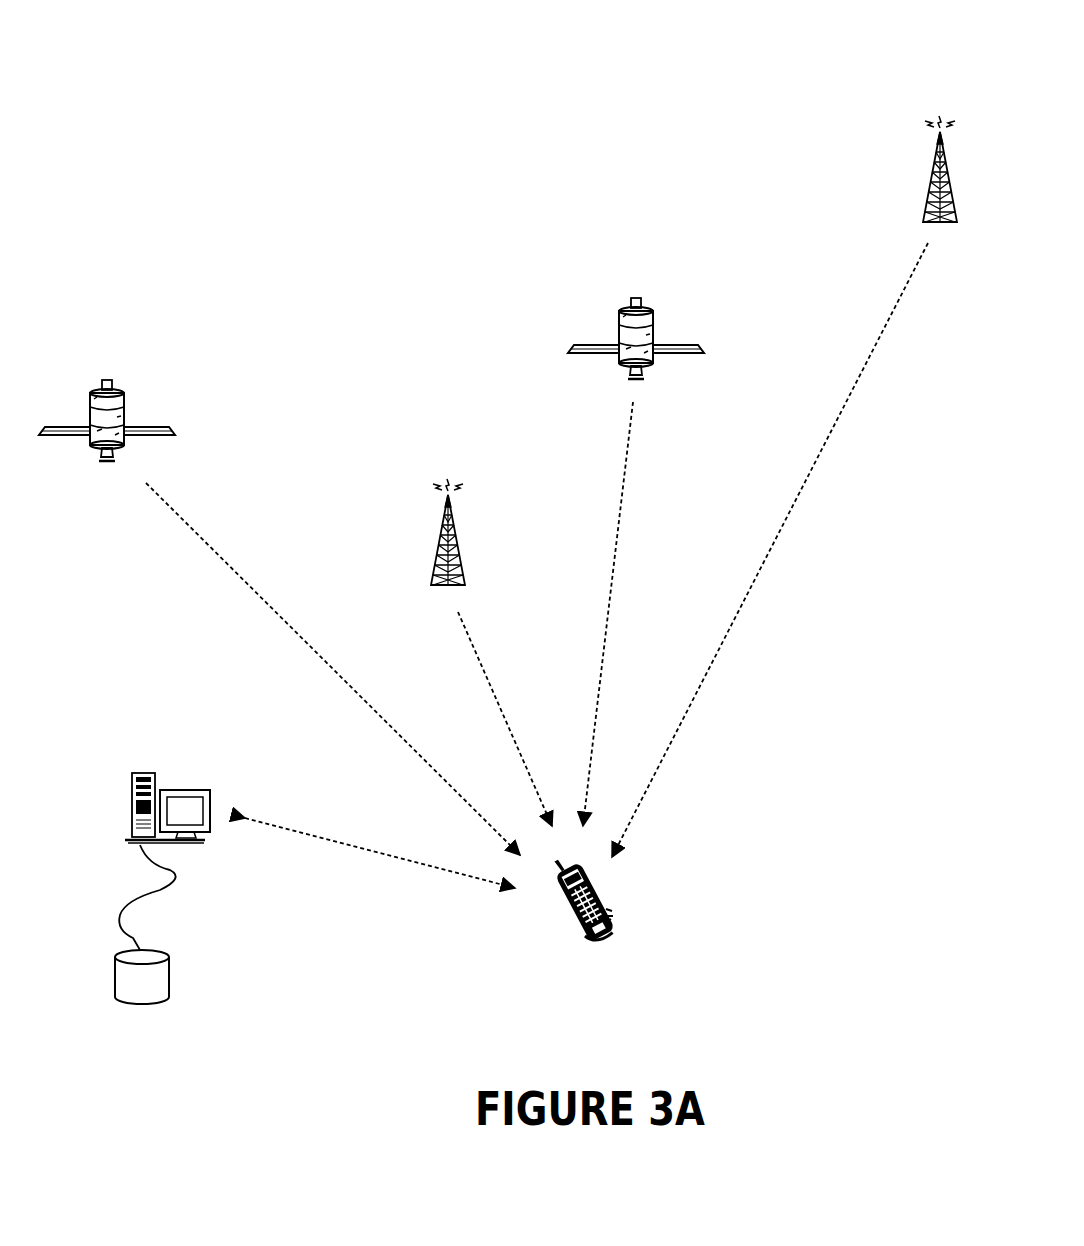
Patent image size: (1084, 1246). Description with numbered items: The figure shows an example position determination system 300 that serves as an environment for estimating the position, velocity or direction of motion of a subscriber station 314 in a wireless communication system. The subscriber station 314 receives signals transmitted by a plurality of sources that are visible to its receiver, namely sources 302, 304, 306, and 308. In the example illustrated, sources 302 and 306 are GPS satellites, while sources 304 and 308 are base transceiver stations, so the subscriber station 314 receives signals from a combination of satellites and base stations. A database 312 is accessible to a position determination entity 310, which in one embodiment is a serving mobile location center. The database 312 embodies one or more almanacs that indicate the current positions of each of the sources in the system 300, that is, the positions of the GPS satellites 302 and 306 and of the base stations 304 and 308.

The position determination system 300 is at (547, 108).
The GPS satellite 302 is at (109, 380).
The base transceiver station 304 is at (440, 532).
The GPS satellite 306 is at (637, 297).
The base transceiver station 308 is at (935, 172).
The position determination entity 310 is at (185, 790).
The database 312 is at (170, 980).
The subscriber station 314 is at (550, 915).